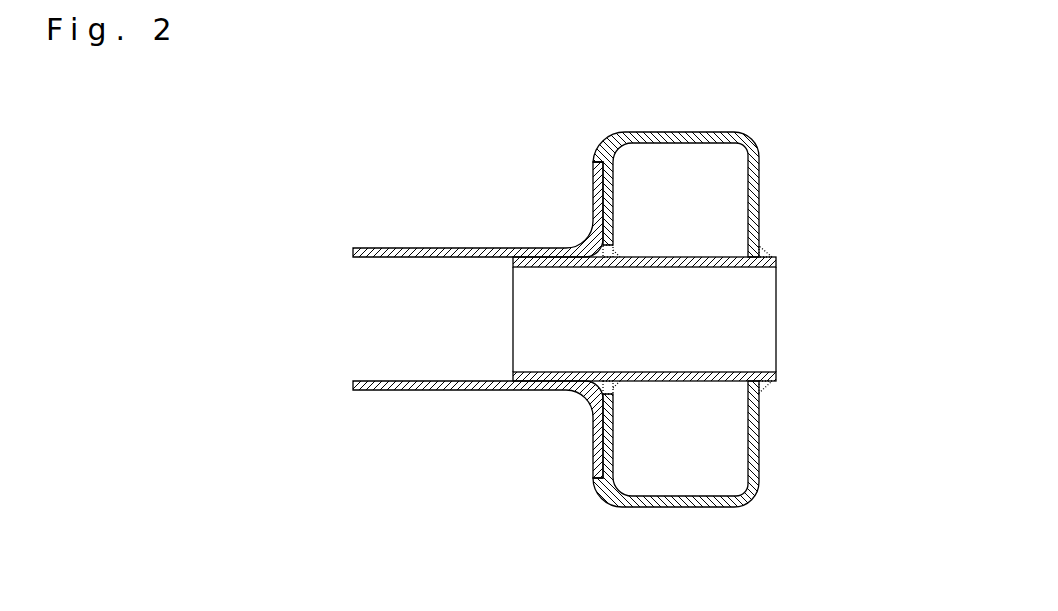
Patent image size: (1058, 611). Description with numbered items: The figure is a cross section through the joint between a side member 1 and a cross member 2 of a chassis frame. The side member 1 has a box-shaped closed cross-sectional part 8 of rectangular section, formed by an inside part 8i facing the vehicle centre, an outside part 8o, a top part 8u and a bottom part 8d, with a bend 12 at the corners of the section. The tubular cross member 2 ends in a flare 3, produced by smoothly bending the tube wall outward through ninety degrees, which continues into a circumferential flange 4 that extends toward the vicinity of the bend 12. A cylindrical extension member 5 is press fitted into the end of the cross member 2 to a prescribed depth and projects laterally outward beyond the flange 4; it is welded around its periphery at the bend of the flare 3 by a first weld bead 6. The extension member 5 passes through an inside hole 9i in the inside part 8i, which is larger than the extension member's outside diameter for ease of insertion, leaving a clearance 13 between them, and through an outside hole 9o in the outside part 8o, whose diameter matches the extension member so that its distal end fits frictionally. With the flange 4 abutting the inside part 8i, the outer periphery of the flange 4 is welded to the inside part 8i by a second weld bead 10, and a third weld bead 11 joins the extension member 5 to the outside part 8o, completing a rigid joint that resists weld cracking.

The side member 1 is at (672, 130).
The cross member 2 is at (402, 248).
The flare 3 is at (583, 238).
The flange 4 is at (594, 185).
The extension member 5 is at (683, 258).
The first weld bead 6 is at (616, 254).
The closed cross-sectional part 8 is at (767, 192).
The top part 8u is at (688, 132).
The bottom part 8d is at (681, 506).
The inside part 8i is at (611, 440).
The outside part 8o is at (760, 433).
The inside hole 9i is at (605, 430).
The outside hole 9o is at (755, 372).
The second weld bead 10 is at (598, 158).
The third weld bead 11 is at (762, 257).
The bend 12 is at (607, 136).
The gap 13 is at (612, 387).